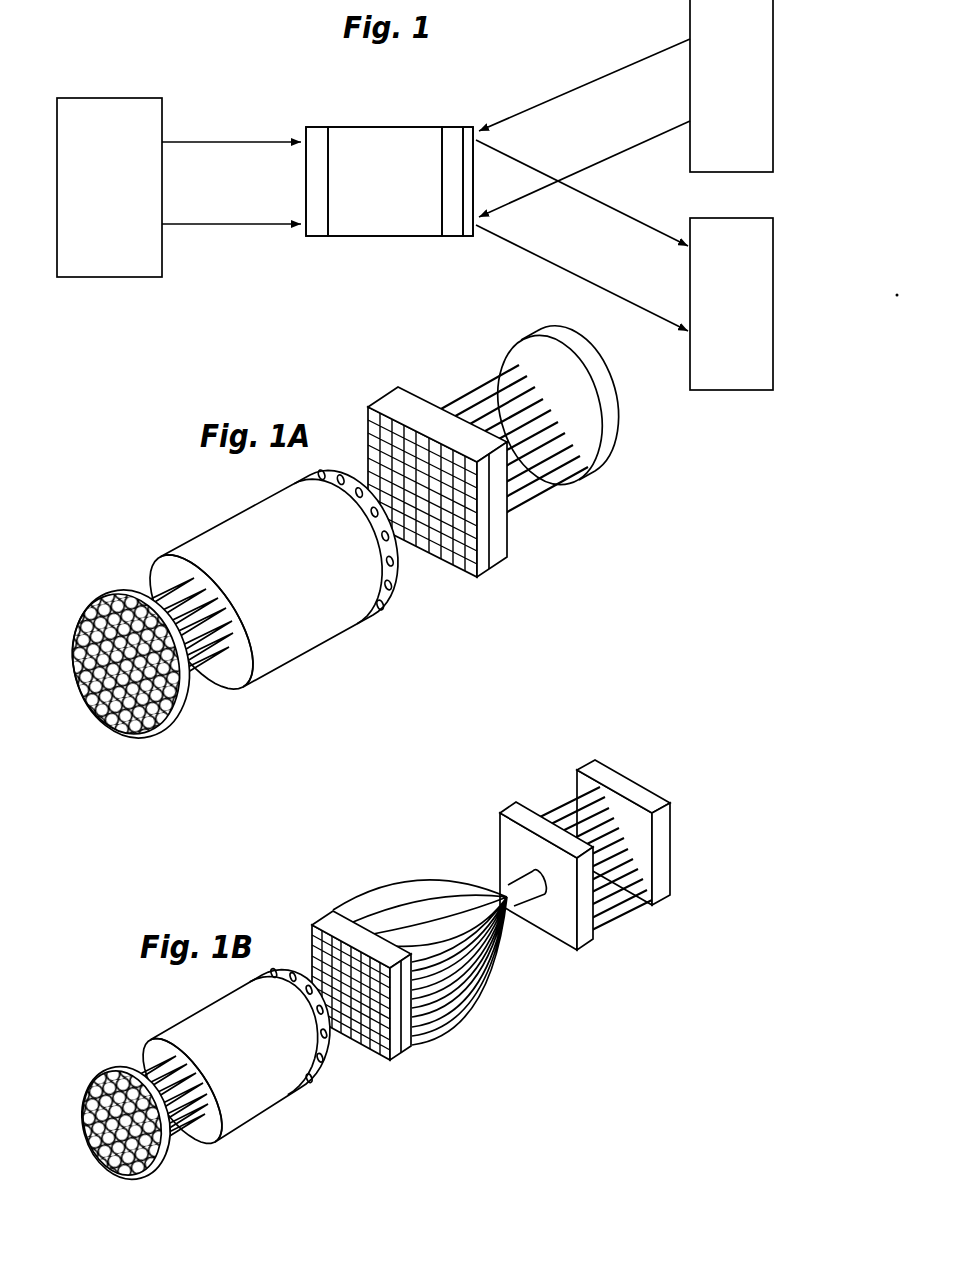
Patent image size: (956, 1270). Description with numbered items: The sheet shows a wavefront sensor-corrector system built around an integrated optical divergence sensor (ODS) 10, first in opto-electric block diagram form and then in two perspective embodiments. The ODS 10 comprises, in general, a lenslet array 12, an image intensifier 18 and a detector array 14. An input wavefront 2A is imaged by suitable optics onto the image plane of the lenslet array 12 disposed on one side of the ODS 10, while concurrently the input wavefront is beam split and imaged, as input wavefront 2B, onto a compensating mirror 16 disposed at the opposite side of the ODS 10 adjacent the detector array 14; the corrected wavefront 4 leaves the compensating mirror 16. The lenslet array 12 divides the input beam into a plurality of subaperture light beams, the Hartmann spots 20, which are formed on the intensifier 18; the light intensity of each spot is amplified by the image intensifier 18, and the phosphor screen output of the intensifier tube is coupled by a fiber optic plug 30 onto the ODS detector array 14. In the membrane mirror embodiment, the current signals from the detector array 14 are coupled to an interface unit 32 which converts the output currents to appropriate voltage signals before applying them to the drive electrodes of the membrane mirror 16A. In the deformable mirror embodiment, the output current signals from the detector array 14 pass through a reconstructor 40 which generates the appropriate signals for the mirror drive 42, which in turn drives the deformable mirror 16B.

In FIG. 1, the input wavefront 2A is at (128, 97).
In FIG. 1, the input wavefront 2B is at (773, 46).
In FIG. 1, the corrected wavefront 4 is at (773, 314).
In FIG. 1, the integrated optical divergence sensor 10 is at (473, 110).
In FIG. 1, the lenslet array 12 is at (311, 238).
In FIG. 1A, the lenslet array 12 is at (180, 731).
In FIG. 1B, the lenslet array 12 is at (163, 1172).
In FIG. 1, the detector array 14 is at (462, 238).
In FIG. 1A, the detector array 14 is at (488, 579).
In FIG. 1B, the detector array 14 is at (404, 1062).
In FIG. 1, the compensating mirror 16 is at (477, 125).
In FIG. 1, the image intensifier 18 is at (395, 209).
In FIG. 1A, the image intensifier 18 is at (341, 635).
In FIG. 1B, the image intensifier 18 is at (293, 1099).
In FIG. 1A, the membrane mirror 16A is at (599, 480).
In FIG. 1A, the Hartmann spots 20 is at (216, 660).
In FIG. 1B, the Hartmann spots 20 is at (196, 1115).
In FIG. 1A, the fiber optic plug 30 is at (400, 591).
In FIG. 1B, the fiber optic plug 30 is at (336, 1067).
In FIG. 1A, the interface unit 32 is at (509, 571).
In FIG. 1B, the reconstructor 40 is at (423, 1047).
In FIG. 1B, the mirror drive 42 is at (591, 953).
In FIG. 1B, the deformable mirror 16B is at (666, 908).